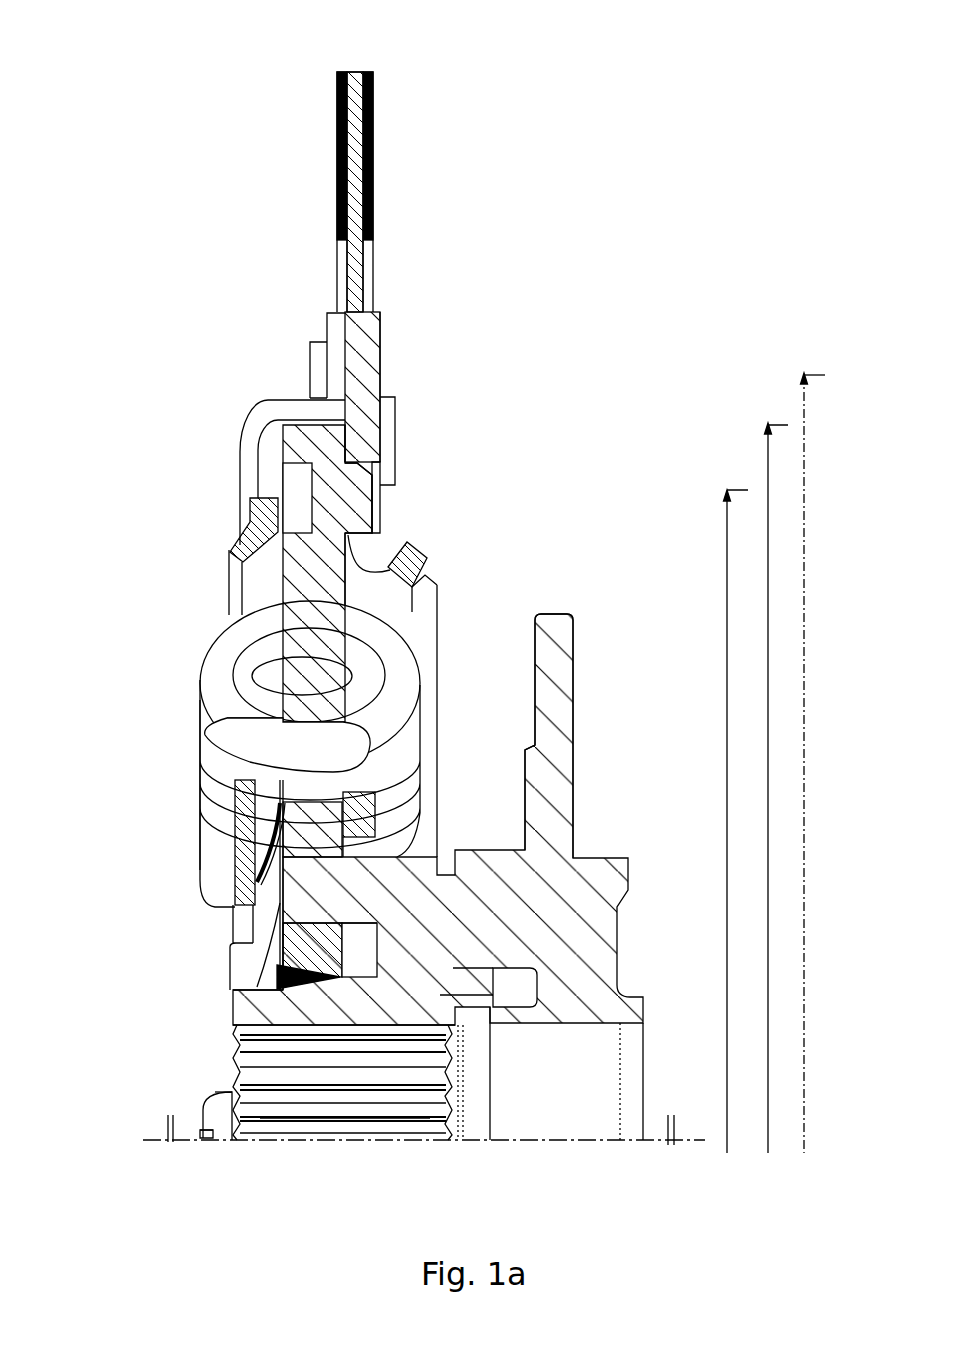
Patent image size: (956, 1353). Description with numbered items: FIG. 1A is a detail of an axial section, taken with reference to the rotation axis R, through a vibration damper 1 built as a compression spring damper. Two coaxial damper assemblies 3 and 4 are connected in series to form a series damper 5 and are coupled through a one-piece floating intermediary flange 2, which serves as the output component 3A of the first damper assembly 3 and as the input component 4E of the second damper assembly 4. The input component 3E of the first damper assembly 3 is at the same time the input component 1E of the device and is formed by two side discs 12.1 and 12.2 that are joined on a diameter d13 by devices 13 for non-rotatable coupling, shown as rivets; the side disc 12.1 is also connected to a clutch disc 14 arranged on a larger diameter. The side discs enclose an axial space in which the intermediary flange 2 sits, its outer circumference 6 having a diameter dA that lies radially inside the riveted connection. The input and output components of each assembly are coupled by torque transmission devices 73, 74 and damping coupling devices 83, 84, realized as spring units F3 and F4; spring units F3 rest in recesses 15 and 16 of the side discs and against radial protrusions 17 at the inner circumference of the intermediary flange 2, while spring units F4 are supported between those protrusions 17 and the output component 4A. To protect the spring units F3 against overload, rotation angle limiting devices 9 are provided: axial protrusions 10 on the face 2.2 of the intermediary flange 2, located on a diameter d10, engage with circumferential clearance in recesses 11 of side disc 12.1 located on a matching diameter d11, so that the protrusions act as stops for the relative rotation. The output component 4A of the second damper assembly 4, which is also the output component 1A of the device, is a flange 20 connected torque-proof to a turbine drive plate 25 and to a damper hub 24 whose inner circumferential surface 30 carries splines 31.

The vibration damper 1 is at (630, 80).
The series damper 5 is at (588, 130).
The clutch disc 14 is at (370, 208).
The input component of device 1E is at (368, 337).
The input component of first damper assembly 3E is at (440, 360).
The side disc 12.1 is at (378, 372).
The devices for non-rotatable coupling 13 is at (318, 353).
The outer circumference of intermediary flange 6 is at (294, 411).
The face of intermediary flange 2.2 is at (340, 441).
The side disc 12.2 is at (262, 449).
The rotation angle limiting devices 9 is at (388, 477).
The floating intermediary flange 2 is at (206, 573).
The input component of second damper assembly 4E is at (206, 573).
The output component of first damper assembly 3A is at (287, 583).
The axial protrusion 10 is at (363, 514).
The recess 11 is at (377, 530).
The recess in side disc 12.1 15 is at (428, 568).
The recess in side disc 12.2 16 is at (225, 616).
The torque transmission device 73 is at (240, 643).
The damping coupling device 83 is at (222, 651).
The spring unit F3 is at (222, 688).
The first damper assembly 3 is at (185, 738).
The radial protrusion 17 is at (315, 630).
The turbine drive plate 25 is at (545, 795).
The output component of second damper assembly 4A is at (203, 885).
The output component of device 1A is at (307, 958).
The flange 20 is at (277, 977).
The damper hub 24 is at (248, 1017).
The second damper assembly 4 is at (195, 1090).
The splines 31 is at (312, 1120).
The inner circumferential surface 30 is at (363, 1148).
The torque transmission device 74 is at (222, 1118).
The damping coupling device 84 is at (205, 1126).
The spring unit F4 is at (213, 1128).
The rotation axis R is at (650, 1140).
The diameter of axial protrusions d10 is at (731, 821).
The diameter of recesses d11 is at (731, 821).
The outer diameter of intermediary flange dA is at (772, 788).
The diameter of side disc connection d13 is at (807, 763).